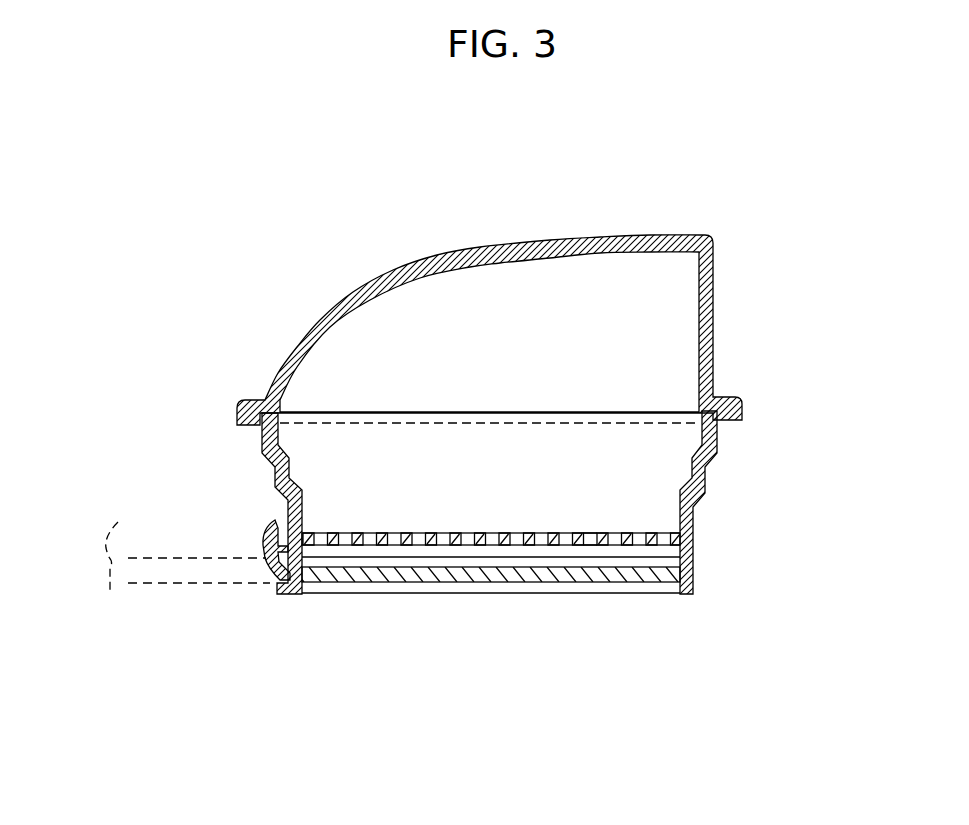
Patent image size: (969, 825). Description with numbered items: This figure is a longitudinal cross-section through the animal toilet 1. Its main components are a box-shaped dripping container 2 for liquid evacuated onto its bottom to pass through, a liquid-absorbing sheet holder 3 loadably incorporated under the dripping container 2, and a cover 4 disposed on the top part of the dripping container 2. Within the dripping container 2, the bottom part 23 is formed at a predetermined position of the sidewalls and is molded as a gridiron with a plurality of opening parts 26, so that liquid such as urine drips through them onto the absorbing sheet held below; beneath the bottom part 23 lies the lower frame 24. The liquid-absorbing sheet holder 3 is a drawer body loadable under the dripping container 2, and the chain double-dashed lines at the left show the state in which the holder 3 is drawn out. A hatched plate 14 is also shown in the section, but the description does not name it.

The animal toilet 1 is at (531, 203).
The dripping container 2 is at (728, 476).
The liquid-absorbing sheet holder 3 is at (252, 524).
The cover 4 is at (727, 315).
The heating plate 14 is at (383, 583).
The bottom part 23 is at (695, 533).
The lower frame 24 is at (473, 586).
The opening parts 26 is at (590, 537).